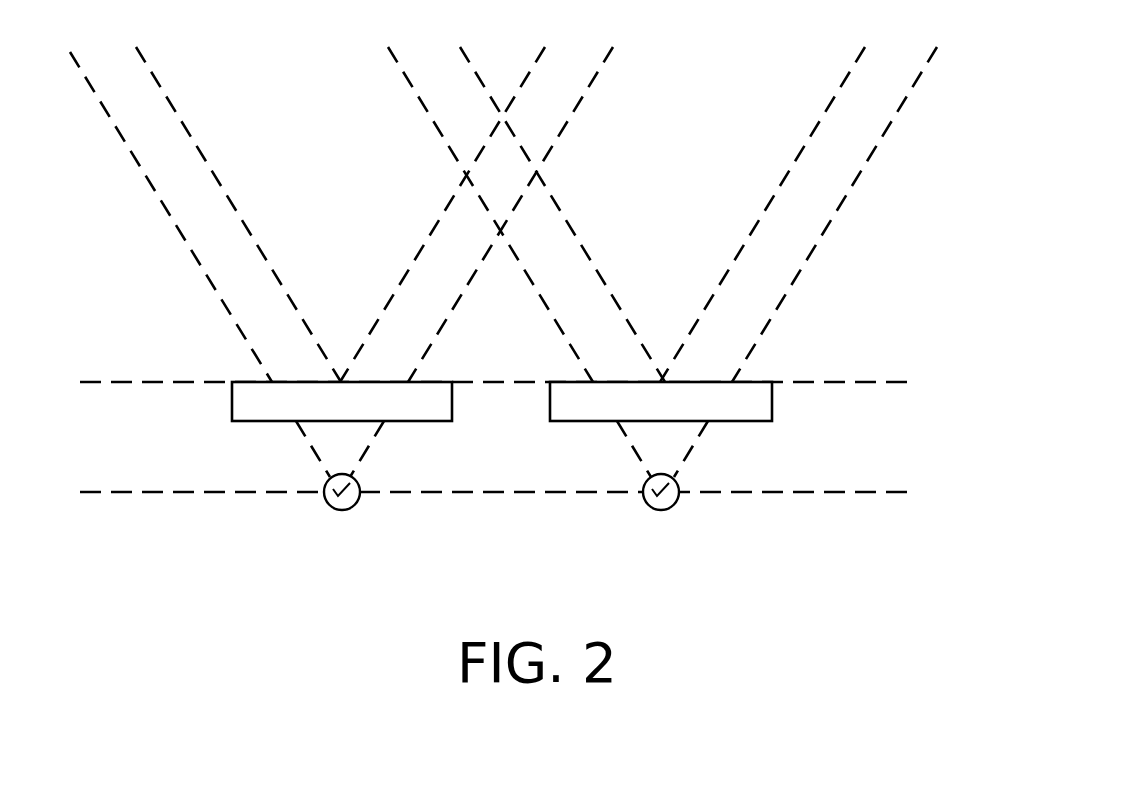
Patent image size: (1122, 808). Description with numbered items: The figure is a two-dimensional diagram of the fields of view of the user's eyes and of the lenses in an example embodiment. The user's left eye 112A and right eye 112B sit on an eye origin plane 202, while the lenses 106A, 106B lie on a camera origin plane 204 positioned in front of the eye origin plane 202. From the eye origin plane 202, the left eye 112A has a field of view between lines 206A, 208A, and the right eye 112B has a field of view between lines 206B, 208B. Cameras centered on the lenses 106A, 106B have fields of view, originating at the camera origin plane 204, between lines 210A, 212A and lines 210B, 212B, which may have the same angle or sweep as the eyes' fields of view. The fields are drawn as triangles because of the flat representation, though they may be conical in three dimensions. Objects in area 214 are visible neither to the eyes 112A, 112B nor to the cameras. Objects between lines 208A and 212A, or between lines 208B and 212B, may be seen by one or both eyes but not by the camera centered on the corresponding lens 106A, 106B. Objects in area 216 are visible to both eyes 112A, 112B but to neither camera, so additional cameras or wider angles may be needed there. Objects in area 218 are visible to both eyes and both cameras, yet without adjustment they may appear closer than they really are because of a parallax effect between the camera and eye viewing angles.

The eye origin plane 202 is at (267, 501).
The camera origin plane 204 is at (880, 390).
The lens 106A is at (249, 422).
The lens 106B is at (748, 422).
The user's left eye 112A is at (347, 509).
The user's right eye 112B is at (666, 509).
The line 206A is at (313, 450).
The line 206B is at (690, 448).
The line 208A is at (375, 441).
The line 208B is at (630, 441).
The line 210A is at (273, 262).
The line 210B is at (735, 259).
The line 212A is at (410, 264).
The line 212B is at (590, 261).
The area 214 is at (520, 331).
The area 216 is at (520, 186).
The area 218 is at (519, 82).